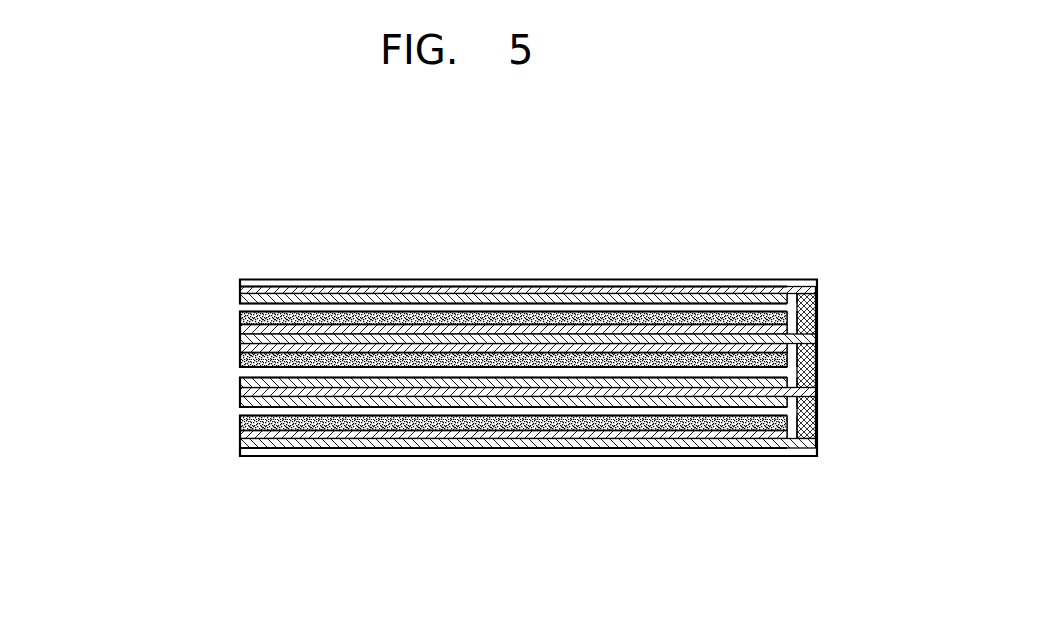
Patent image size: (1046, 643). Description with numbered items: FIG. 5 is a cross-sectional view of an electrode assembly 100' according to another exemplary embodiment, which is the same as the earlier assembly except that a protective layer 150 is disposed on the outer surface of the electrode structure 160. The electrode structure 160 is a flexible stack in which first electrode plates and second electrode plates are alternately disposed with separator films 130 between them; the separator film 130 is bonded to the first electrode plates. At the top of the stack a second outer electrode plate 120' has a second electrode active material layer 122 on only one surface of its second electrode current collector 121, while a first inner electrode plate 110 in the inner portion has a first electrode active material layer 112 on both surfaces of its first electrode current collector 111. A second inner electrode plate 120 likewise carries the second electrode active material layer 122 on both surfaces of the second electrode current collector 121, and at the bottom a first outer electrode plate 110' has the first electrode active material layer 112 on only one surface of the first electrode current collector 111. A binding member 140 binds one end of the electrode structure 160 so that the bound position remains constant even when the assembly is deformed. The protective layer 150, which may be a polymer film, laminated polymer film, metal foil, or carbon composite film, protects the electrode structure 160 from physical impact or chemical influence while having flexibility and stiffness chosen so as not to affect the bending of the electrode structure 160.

The electrode assembly 100' is at (470, 331).
The first inner electrode plate 110 is at (447, 337).
The first outer electrode plate 110' is at (447, 459).
The first electrode current collector 111 is at (241, 339).
The first electrode active material layer 112 is at (241, 329).
The second inner electrode plate 120 is at (447, 408).
The second outer electrode plate 120' is at (447, 263).
The second electrode current collector 121 is at (242, 291).
The second electrode active material layer 122 is at (241, 300).
The separator film 130 is at (241, 316).
The binding member 140 is at (810, 314).
The protective layer 150 is at (738, 279).
The electrode structure 160 is at (104, 243).